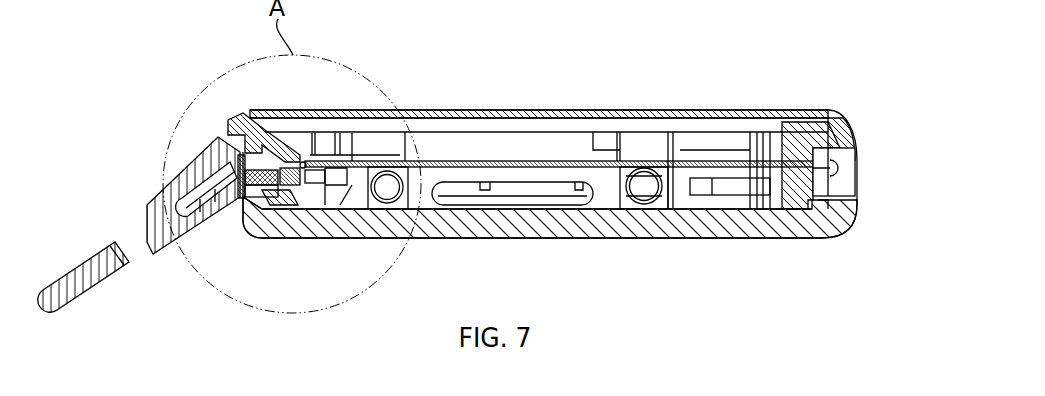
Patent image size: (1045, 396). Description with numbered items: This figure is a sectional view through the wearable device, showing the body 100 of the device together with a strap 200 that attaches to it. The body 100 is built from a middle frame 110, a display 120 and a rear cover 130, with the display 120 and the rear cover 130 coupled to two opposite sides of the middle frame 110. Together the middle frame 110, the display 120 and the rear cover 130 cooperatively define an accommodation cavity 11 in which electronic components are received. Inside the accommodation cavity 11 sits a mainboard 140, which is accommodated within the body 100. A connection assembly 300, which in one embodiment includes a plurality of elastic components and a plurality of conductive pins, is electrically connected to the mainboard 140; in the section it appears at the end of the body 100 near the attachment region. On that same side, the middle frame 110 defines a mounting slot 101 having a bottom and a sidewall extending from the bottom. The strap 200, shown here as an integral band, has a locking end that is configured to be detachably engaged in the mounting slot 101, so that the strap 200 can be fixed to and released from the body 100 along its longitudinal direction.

The body 100 is at (742, 110).
The mounting slot 101 is at (219, 143).
The accommodation cavity 11 is at (526, 142).
The middle frame 110 is at (849, 128).
The display 120 is at (668, 110).
The rear cover 130 is at (656, 230).
The mainboard 140 is at (462, 163).
The strap 200 is at (100, 246).
The connection assembly 300 is at (269, 150).